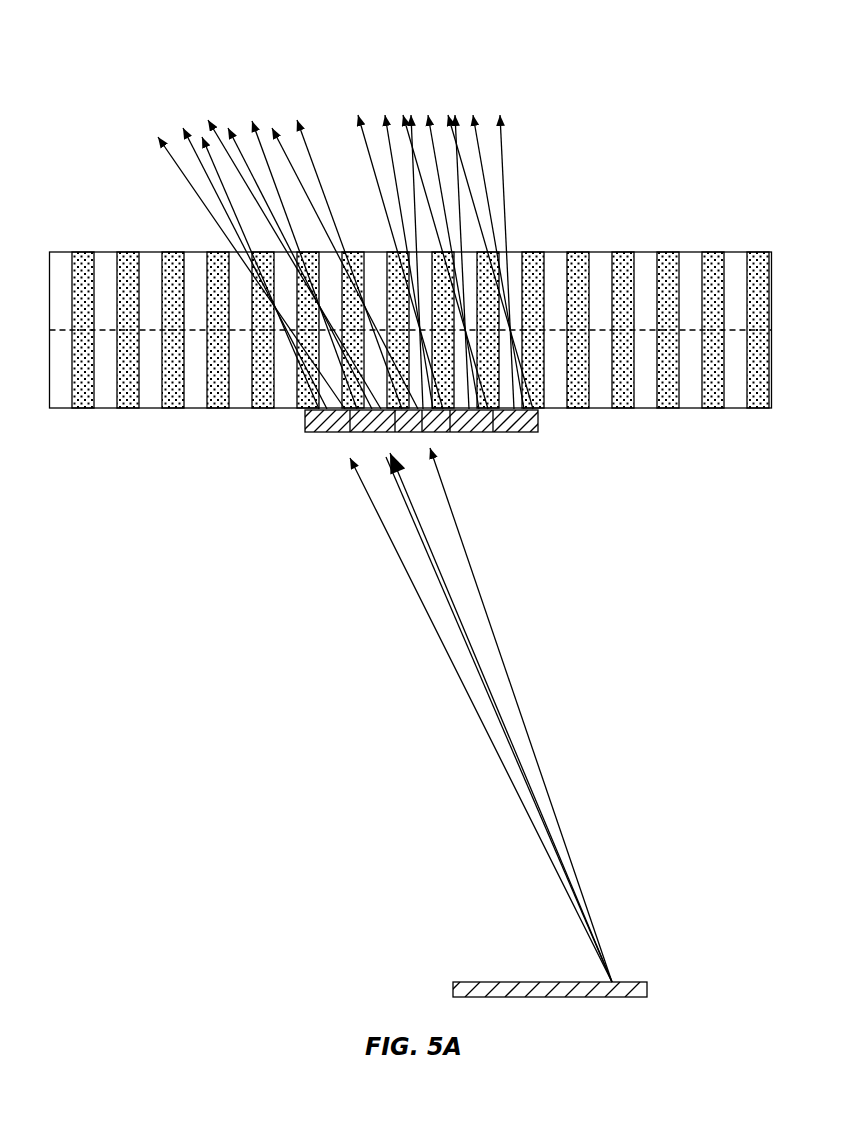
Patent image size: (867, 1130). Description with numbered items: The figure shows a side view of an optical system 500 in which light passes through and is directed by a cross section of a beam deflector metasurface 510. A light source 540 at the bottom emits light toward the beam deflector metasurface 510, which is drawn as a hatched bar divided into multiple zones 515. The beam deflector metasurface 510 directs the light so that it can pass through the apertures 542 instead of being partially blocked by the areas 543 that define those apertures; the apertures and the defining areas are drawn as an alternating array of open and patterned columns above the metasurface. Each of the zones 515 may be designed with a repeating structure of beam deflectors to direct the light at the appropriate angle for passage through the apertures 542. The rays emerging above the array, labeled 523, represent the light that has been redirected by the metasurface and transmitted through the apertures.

The optical system 500 is at (69, 64).
The beam deflector metasurface 510 is at (443, 448).
The zones 515 is at (404, 448).
The output light rays 523 is at (178, 168).
The light source 540 is at (648, 989).
The apertures 542 is at (150, 330).
The areas defining the apertures 543 is at (81, 251).